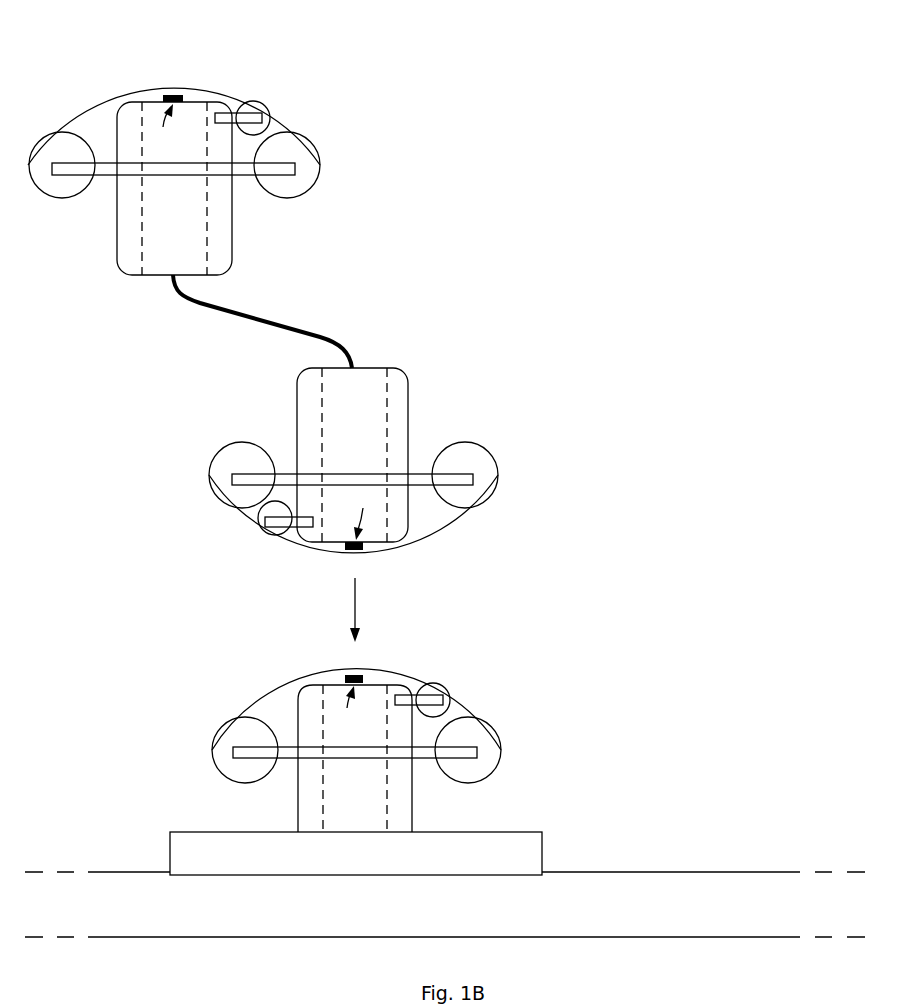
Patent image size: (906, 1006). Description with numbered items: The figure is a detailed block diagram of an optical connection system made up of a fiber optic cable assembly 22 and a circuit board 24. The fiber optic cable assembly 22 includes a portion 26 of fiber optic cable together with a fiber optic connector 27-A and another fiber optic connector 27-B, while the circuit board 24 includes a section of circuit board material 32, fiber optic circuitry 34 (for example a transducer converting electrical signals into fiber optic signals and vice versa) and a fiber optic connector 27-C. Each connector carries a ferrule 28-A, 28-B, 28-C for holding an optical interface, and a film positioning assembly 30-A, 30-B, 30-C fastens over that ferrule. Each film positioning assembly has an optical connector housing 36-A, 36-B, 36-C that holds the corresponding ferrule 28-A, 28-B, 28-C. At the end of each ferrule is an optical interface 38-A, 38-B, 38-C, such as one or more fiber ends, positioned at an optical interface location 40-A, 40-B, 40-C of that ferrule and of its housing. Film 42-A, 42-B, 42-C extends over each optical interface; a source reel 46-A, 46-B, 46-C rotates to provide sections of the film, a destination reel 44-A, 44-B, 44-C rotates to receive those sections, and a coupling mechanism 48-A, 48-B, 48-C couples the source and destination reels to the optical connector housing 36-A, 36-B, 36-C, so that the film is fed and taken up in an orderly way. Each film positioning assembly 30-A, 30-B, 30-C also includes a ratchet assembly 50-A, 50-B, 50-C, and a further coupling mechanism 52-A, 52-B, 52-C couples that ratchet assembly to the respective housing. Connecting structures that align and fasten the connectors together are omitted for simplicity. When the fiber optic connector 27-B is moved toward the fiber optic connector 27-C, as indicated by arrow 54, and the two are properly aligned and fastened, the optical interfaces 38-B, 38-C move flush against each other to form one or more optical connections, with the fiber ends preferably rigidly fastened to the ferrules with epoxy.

The fiber optic cable assembly 22 is at (420, 224).
The circuit board 24 is at (560, 637).
The portion of fiber optic cable 26 is at (222, 313).
The fiber optic connector 27-A is at (84, 318).
The fiber optic connector 27-B is at (90, 418).
The fiber optic connector 27-C is at (112, 652).
The ferrule 28-A is at (153, 239).
The ferrule 28-B is at (331, 433).
The ferrule 28-C is at (334, 813).
The film positioning assembly 30-A is at (308, 102).
The film positioning assembly 30-B is at (519, 447).
The film positioning assembly 30-C is at (449, 641).
The section of circuit board material 32 is at (702, 911).
The fiber optic circuitry 34 is at (444, 864).
The optical connector housing 36-A is at (232, 255).
The optical connector housing 36-B is at (305, 390).
The optical connector housing 36-C is at (405, 790).
The optical interface 38-A is at (173, 92).
The optical interface 38-B is at (352, 553).
The optical interface 38-C is at (347, 672).
The optical interface location 40-A is at (172, 127).
The optical interface location 40-B is at (351, 516).
The optical interface location 40-C is at (353, 710).
The film 42-A is at (102, 97).
The film 42-B is at (453, 532).
The film 42-C is at (268, 690).
The destination reel 44-A is at (292, 190).
The destination reel 44-B is at (227, 452).
The destination reel 44-C is at (482, 765).
The source reel 46-A is at (58, 192).
The source reel 46-B is at (480, 455).
The source reel 46-C is at (218, 757).
The coupling mechanism 48-A is at (107, 180).
The coupling mechanism 48-B is at (423, 468).
The coupling mechanism 48-C is at (282, 758).
The ratchet assembly 50-A is at (250, 108).
The ratchet assembly 50-B is at (267, 530).
The ratchet assembly 50-C is at (440, 692).
The coupling mechanism 52-A is at (228, 115).
The coupling mechanism 52-B is at (290, 525).
The coupling mechanism 52-C is at (415, 695).
The arrow 54 is at (357, 605).